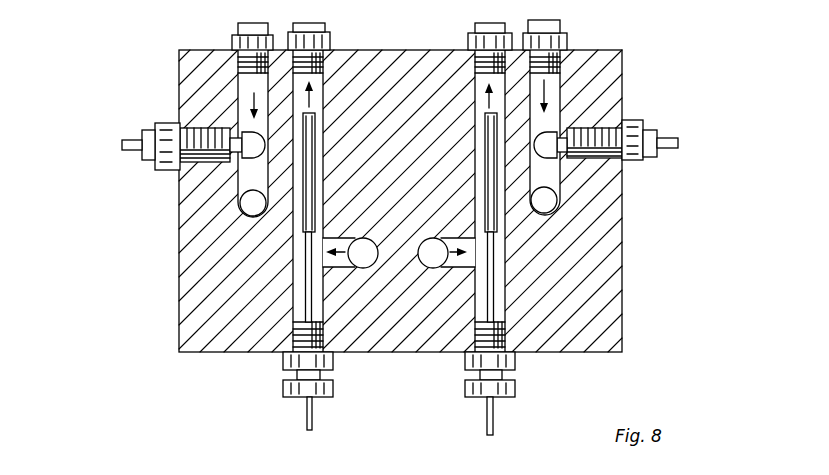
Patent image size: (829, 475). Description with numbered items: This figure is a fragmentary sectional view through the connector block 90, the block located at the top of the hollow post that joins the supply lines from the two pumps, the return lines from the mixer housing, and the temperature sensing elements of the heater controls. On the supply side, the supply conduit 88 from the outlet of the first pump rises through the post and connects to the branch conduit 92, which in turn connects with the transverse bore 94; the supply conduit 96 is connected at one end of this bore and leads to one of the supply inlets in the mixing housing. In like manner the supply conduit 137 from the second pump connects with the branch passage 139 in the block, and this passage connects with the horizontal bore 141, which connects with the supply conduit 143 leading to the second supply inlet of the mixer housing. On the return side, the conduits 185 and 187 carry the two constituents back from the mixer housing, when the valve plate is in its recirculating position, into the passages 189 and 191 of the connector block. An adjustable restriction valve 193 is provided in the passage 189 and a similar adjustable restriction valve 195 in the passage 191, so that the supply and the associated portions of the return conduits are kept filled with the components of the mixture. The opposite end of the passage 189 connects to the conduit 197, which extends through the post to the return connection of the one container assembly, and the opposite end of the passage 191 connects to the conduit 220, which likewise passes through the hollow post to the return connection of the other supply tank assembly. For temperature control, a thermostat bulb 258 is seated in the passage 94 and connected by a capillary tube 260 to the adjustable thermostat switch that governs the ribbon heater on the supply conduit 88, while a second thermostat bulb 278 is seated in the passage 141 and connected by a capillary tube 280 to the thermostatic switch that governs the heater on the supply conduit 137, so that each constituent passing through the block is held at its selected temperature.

The connector block 90 is at (602, 257).
The conduit 187 is at (240, 26).
The passage 191 is at (247, 83).
The adjustable restriction valve 195 is at (250, 152).
The conduit 220 is at (250, 207).
The supply conduit 143 is at (300, 26).
The horizontal bore 141 is at (300, 303).
The thermostat bulb 278 is at (312, 157).
The supply conduit 137 is at (365, 267).
The branch passage 139 is at (345, 241).
The capillary tube 280 is at (311, 413).
The supply conduit 96 is at (482, 28).
The transverse bore 94 is at (500, 308).
The thermostat bulb 258 is at (490, 160).
The supply conduit 88 is at (432, 267).
The branch conduit 92 is at (465, 240).
The capillary tube 260 is at (491, 418).
The conduit 185 is at (557, 25).
The passage 189 is at (553, 82).
The adjustable restriction valve 193 is at (548, 135).
The conduit 197 is at (552, 200).